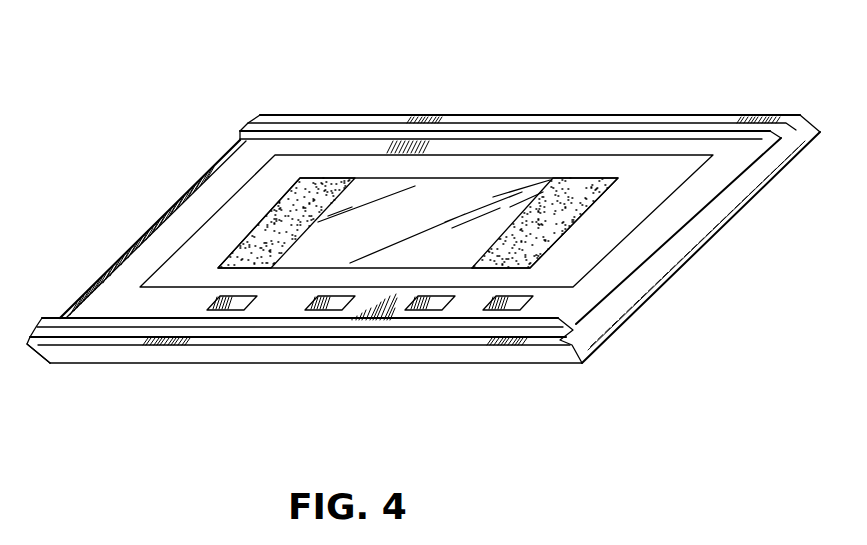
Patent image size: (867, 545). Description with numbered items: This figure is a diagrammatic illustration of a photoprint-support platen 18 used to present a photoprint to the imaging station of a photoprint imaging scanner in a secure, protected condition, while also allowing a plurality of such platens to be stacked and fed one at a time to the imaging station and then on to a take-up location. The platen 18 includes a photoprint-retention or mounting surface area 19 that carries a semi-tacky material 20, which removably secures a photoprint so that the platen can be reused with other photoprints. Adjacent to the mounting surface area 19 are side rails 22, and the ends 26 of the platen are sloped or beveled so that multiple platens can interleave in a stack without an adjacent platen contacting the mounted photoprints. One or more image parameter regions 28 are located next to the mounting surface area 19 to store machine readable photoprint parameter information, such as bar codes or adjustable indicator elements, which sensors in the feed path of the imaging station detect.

The photoprint-support platen 18 is at (173, 168).
The photoprint-retention or mounting surface area 19 is at (442, 183).
The semi-tacky material 20 is at (246, 250).
The side rails 22 is at (578, 128).
The ends of the platen 26 is at (45, 360).
The image parameter regions 28 is at (230, 312).